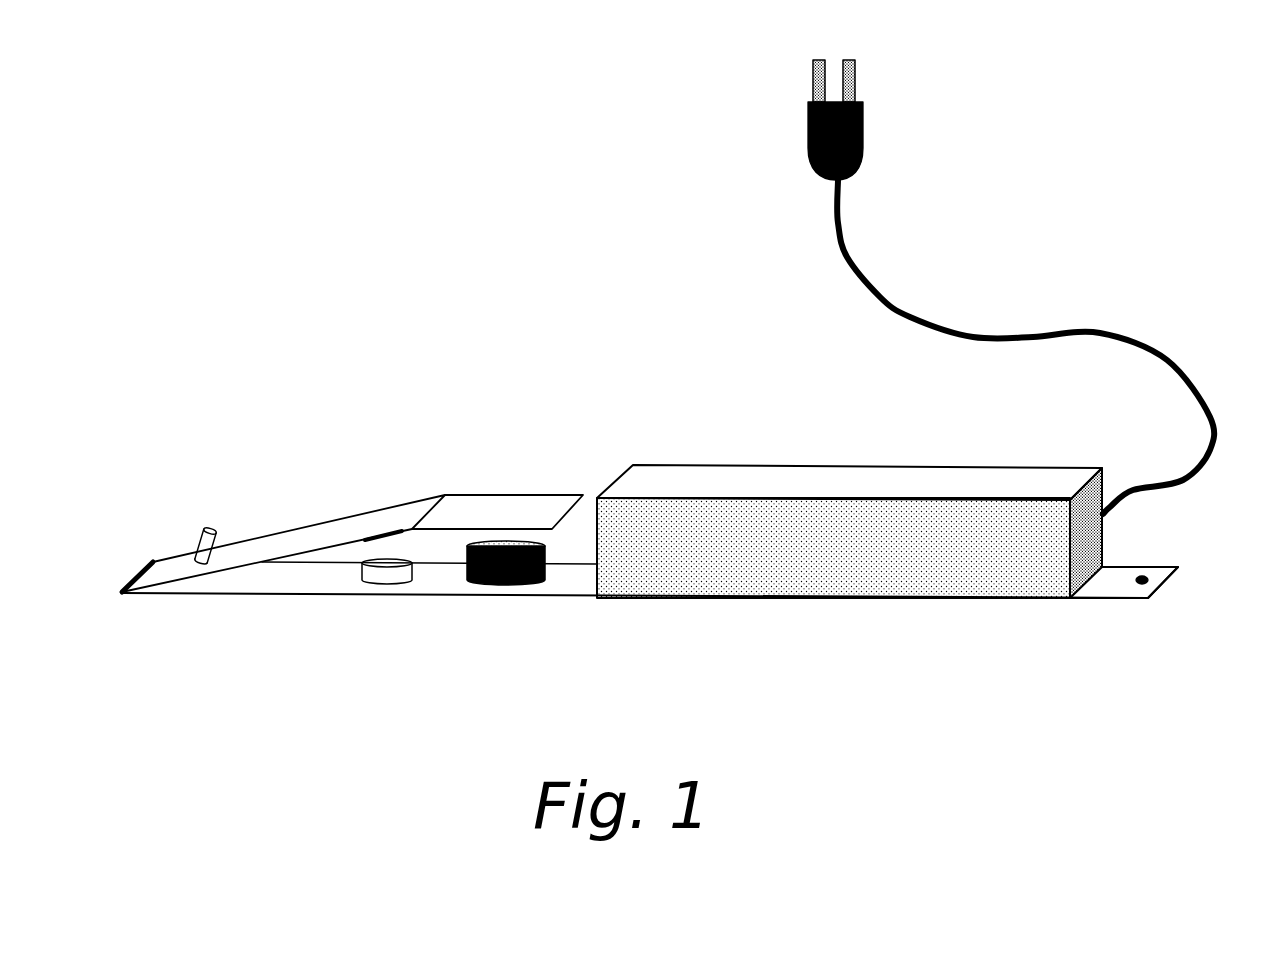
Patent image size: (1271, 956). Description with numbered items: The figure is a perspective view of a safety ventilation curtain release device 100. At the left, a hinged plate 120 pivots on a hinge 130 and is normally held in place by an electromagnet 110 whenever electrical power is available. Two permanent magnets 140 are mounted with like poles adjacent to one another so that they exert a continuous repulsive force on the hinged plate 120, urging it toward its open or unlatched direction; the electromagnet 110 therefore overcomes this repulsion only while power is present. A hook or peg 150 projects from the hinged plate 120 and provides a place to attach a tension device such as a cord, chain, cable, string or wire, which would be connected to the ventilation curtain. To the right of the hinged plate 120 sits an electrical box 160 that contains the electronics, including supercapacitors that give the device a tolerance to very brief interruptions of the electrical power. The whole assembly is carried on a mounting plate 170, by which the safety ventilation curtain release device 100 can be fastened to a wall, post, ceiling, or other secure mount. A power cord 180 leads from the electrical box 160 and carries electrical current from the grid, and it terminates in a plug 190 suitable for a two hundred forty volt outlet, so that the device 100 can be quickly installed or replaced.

The safety ventilation curtain release device 100 is at (898, 648).
The electromagnet 110 is at (487, 587).
The hinged plate 120 is at (320, 533).
The hinge 130 is at (137, 575).
The permanent magnets 140 is at (378, 537).
The hook or peg 150 is at (200, 530).
The electrical box 160 is at (695, 488).
The mounting plate 170 is at (1123, 580).
The power cord 180 is at (1017, 330).
The plug 190 is at (863, 148).